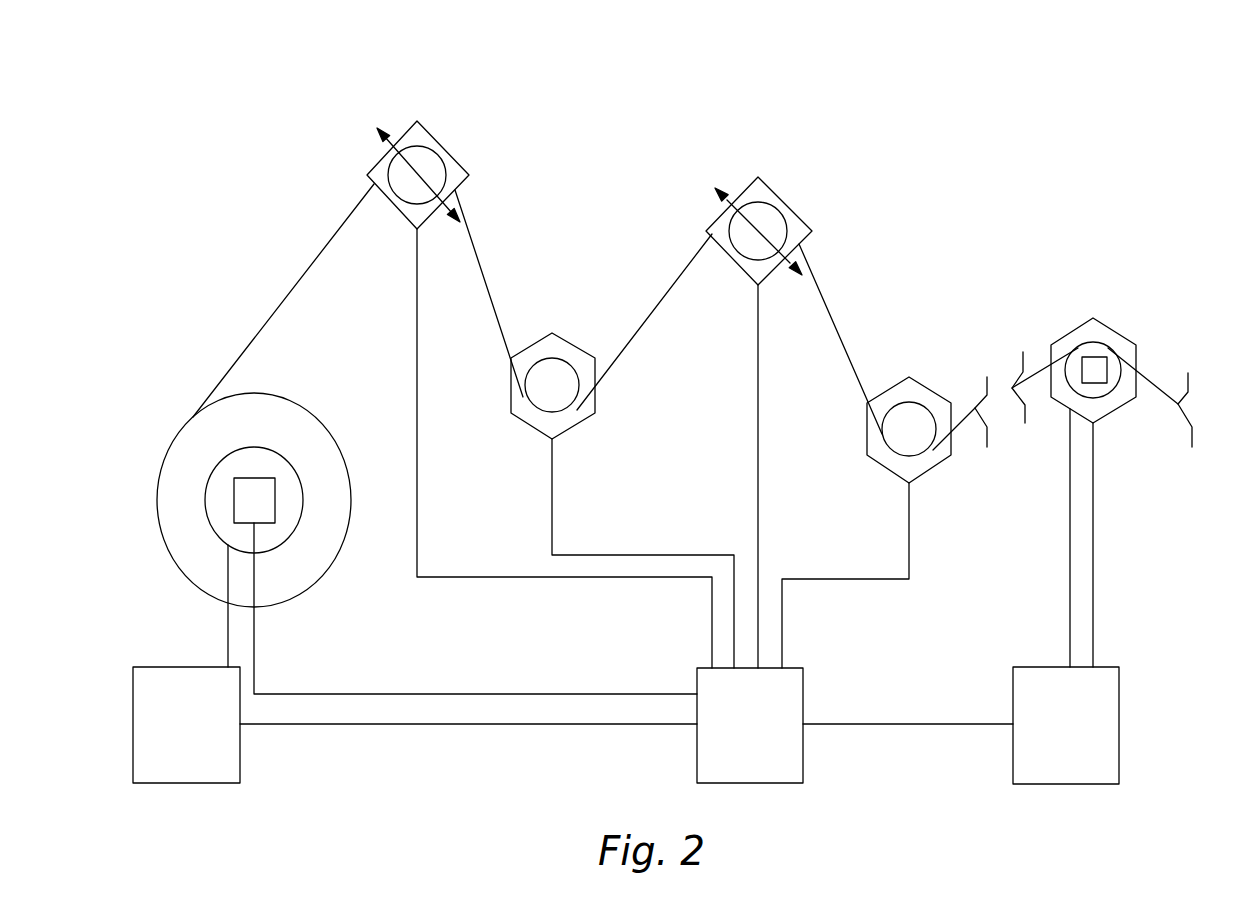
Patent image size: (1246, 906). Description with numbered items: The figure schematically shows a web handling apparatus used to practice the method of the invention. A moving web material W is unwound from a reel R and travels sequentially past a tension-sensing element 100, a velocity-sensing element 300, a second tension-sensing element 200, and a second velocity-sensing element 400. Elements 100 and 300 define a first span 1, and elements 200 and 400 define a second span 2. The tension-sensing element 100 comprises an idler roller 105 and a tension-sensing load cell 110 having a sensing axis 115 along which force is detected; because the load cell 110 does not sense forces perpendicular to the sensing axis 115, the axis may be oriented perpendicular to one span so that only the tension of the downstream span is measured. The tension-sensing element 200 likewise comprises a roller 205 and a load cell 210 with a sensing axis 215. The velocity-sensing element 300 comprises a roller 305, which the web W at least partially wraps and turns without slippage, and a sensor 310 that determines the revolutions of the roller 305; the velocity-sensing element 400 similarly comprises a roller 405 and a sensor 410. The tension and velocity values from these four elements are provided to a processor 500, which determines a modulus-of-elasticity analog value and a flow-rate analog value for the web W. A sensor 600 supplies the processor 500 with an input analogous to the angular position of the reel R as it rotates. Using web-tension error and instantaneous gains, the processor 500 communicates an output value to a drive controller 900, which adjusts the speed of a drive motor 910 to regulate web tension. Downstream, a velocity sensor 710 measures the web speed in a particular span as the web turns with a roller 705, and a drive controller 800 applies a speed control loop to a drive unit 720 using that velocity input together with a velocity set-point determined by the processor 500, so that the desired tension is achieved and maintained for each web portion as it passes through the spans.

The moving web material W is at (250, 338).
The first span 1 is at (493, 273).
The second span 2 is at (848, 308).
The tension-sensing element 100 is at (512, 348).
The idler roller 105 is at (430, 165).
The tension-sensing load cell 110 is at (463, 183).
The sensing axis 115 is at (397, 143).
The tension-sensing element 200 is at (787, 373).
The roller 205 is at (775, 222).
The load cell 210 is at (742, 192).
The sensing axis 215 is at (783, 250).
The velocity-sensing element 300 is at (608, 459).
The roller 305 is at (545, 400).
The sensor 310 is at (572, 417).
The velocity-sensing element 400 is at (880, 478).
The roller 405 is at (897, 443).
The sensor 410 is at (927, 462).
The processor 500 is at (772, 743).
The sensor 600 is at (233, 502).
The roller 705 is at (1100, 350).
The velocity sensor 710 is at (1073, 328).
The drive unit 720 is at (1097, 381).
The drive controller 800 is at (1088, 739).
The drive controller 900 is at (206, 746).
The drive motor 910 is at (268, 465).
The reel R is at (323, 545).